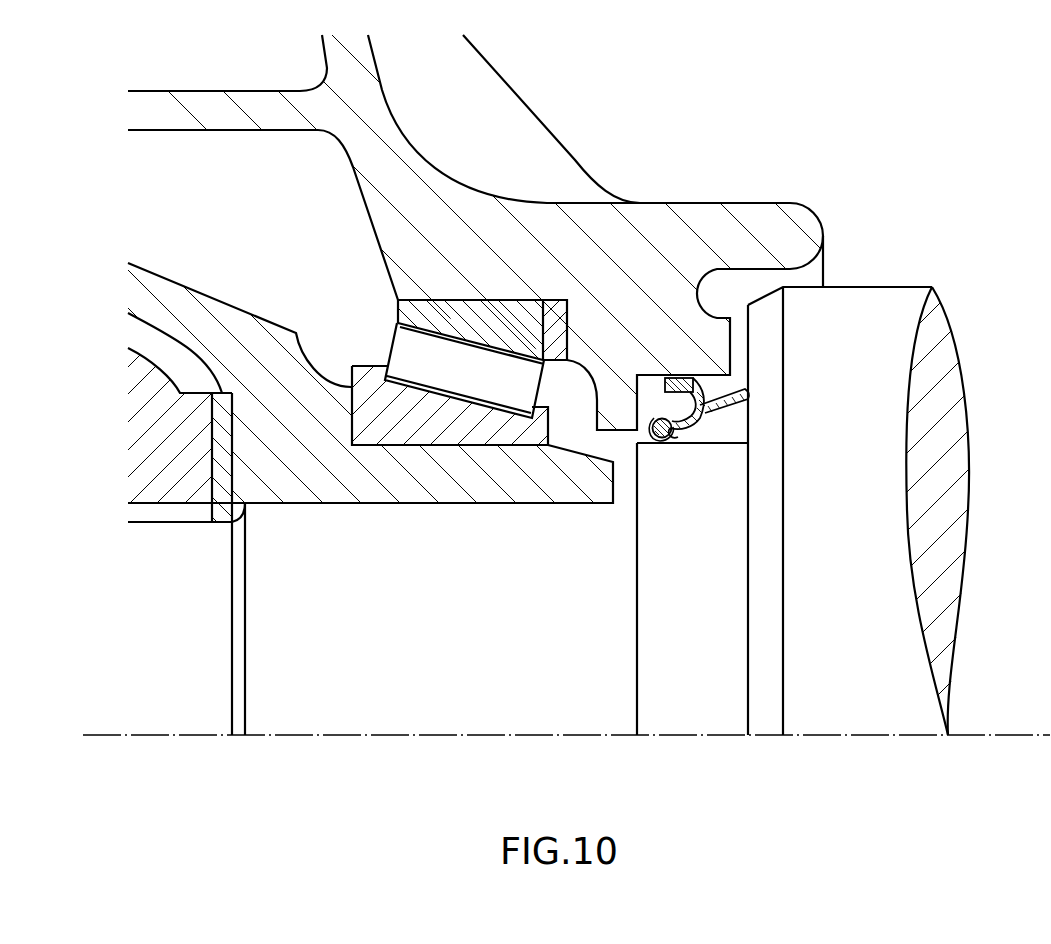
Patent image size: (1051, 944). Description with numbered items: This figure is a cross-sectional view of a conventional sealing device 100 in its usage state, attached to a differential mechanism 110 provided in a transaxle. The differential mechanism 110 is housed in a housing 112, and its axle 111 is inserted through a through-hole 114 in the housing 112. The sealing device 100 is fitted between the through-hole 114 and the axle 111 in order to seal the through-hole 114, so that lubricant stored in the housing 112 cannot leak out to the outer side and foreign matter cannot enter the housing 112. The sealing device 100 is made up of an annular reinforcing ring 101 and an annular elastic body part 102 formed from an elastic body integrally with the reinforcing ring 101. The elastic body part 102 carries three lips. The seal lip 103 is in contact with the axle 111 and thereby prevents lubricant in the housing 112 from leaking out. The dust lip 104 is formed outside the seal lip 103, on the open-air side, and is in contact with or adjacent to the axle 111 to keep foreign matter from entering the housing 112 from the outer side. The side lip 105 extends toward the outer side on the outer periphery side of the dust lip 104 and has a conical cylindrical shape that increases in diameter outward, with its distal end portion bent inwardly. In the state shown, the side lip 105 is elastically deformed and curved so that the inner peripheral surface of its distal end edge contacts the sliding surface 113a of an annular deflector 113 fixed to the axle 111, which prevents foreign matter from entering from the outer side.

The sealing device 100 is at (757, 345).
The reinforcing ring 101 is at (757, 345).
The elastic body part 102 is at (652, 388).
The seal lip 103 is at (659, 450).
The dust lip 104 is at (697, 421).
The side lip 105 is at (743, 403).
The differential mechanism 110 is at (153, 237).
The axle 111 is at (693, 680).
The housing 112 is at (723, 221).
The deflector 113 is at (884, 498).
The sliding surface 113a is at (748, 620).
The through-hole 114 is at (713, 424).